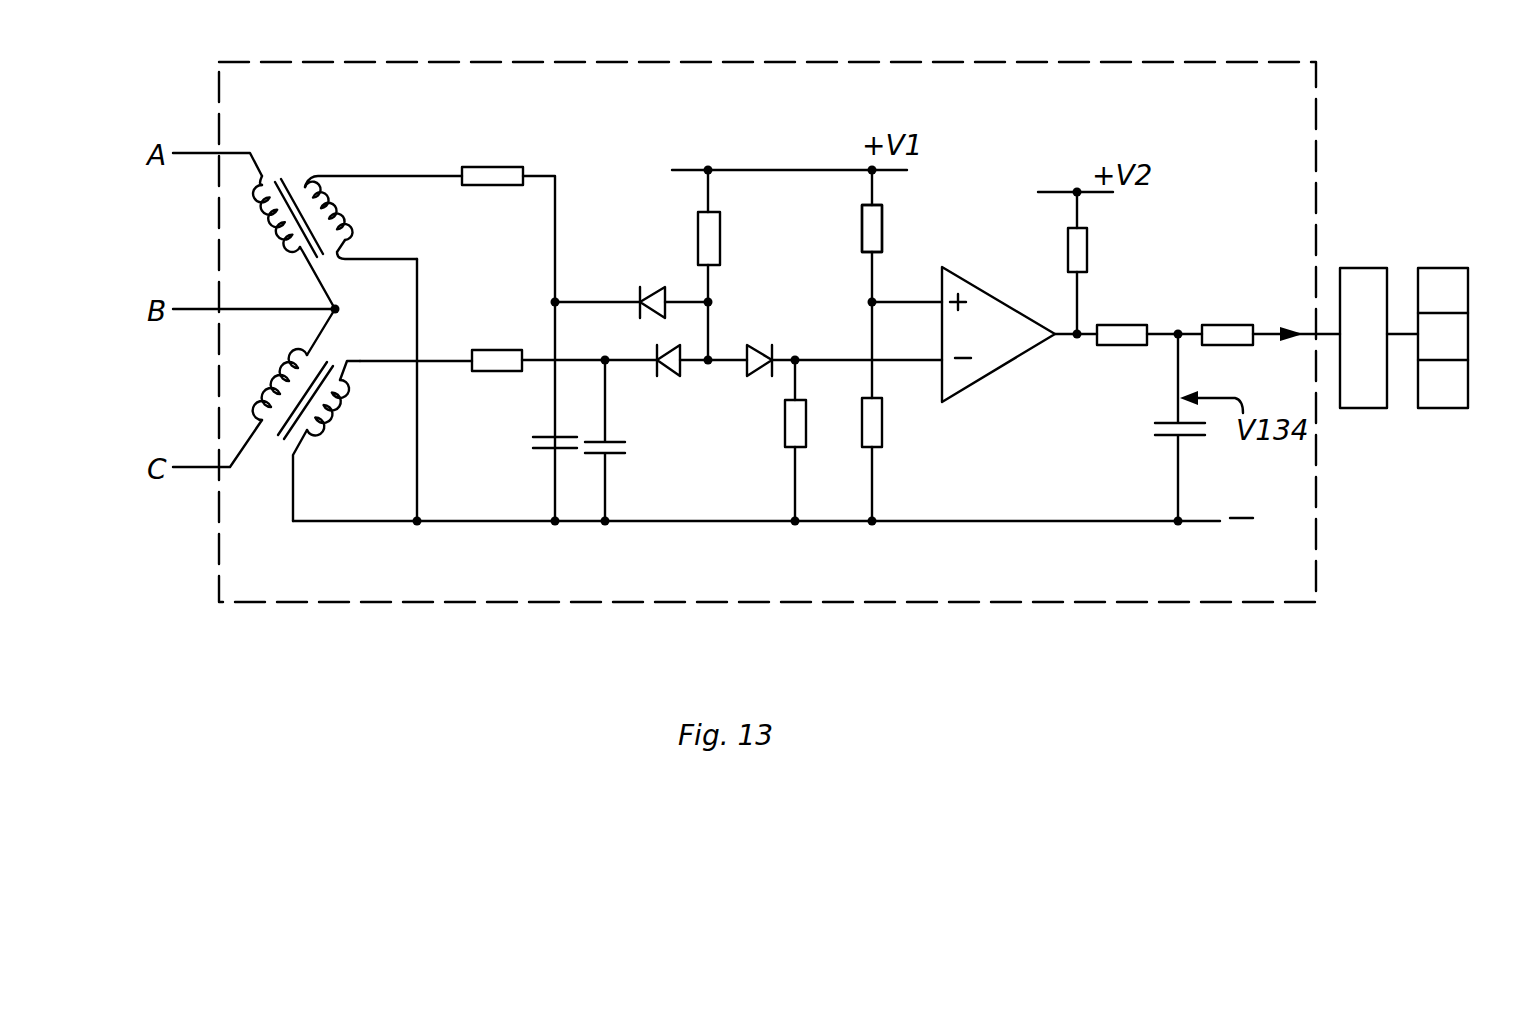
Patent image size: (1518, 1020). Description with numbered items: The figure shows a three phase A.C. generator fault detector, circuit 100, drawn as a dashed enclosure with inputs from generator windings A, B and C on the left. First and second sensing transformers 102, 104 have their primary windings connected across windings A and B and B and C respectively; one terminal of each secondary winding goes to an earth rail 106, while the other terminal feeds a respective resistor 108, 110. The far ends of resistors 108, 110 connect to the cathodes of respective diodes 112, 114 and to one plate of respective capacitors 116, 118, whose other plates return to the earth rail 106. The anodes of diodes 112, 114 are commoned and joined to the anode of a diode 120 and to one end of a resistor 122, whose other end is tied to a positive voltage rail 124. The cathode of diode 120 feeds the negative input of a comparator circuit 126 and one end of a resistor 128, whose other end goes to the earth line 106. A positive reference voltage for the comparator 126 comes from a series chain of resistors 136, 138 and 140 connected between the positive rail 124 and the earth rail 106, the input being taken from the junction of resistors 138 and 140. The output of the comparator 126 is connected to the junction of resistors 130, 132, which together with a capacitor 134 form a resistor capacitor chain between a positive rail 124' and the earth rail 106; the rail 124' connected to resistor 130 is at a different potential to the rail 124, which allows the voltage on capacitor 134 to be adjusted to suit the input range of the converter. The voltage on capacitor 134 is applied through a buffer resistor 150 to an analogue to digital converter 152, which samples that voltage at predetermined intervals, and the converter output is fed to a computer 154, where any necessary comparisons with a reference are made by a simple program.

The circuit 100 is at (755, 62).
The first sensing transformer 102 is at (337, 212).
The second sensing transformer 104 is at (330, 418).
The earth rail 106 is at (945, 523).
The resistor 108 is at (505, 166).
The resistor 110 is at (497, 349).
The diode 112 is at (645, 290).
The diode 114 is at (664, 372).
The capacitor 116 is at (532, 447).
The capacitor 118 is at (615, 458).
The diode 120 is at (765, 348).
The resistor 122 is at (724, 228).
The positive voltage rail 124 is at (789, 139).
The positive voltage rail 124' is at (1052, 166).
The comparator circuit 126 is at (1002, 322).
The resistor 128 is at (785, 437).
The resistor 130 is at (1090, 240).
The resistor 132 is at (1120, 325).
The capacitor 134 is at (1157, 428).
The resistor 136 is at (883, 240).
The resistor 138 is at (872, 228).
The resistor 140 is at (883, 440).
The buffer resistor 150 is at (1230, 325).
The analogue to digital converter 152 is at (1363, 275).
The computer 154 is at (1438, 285).